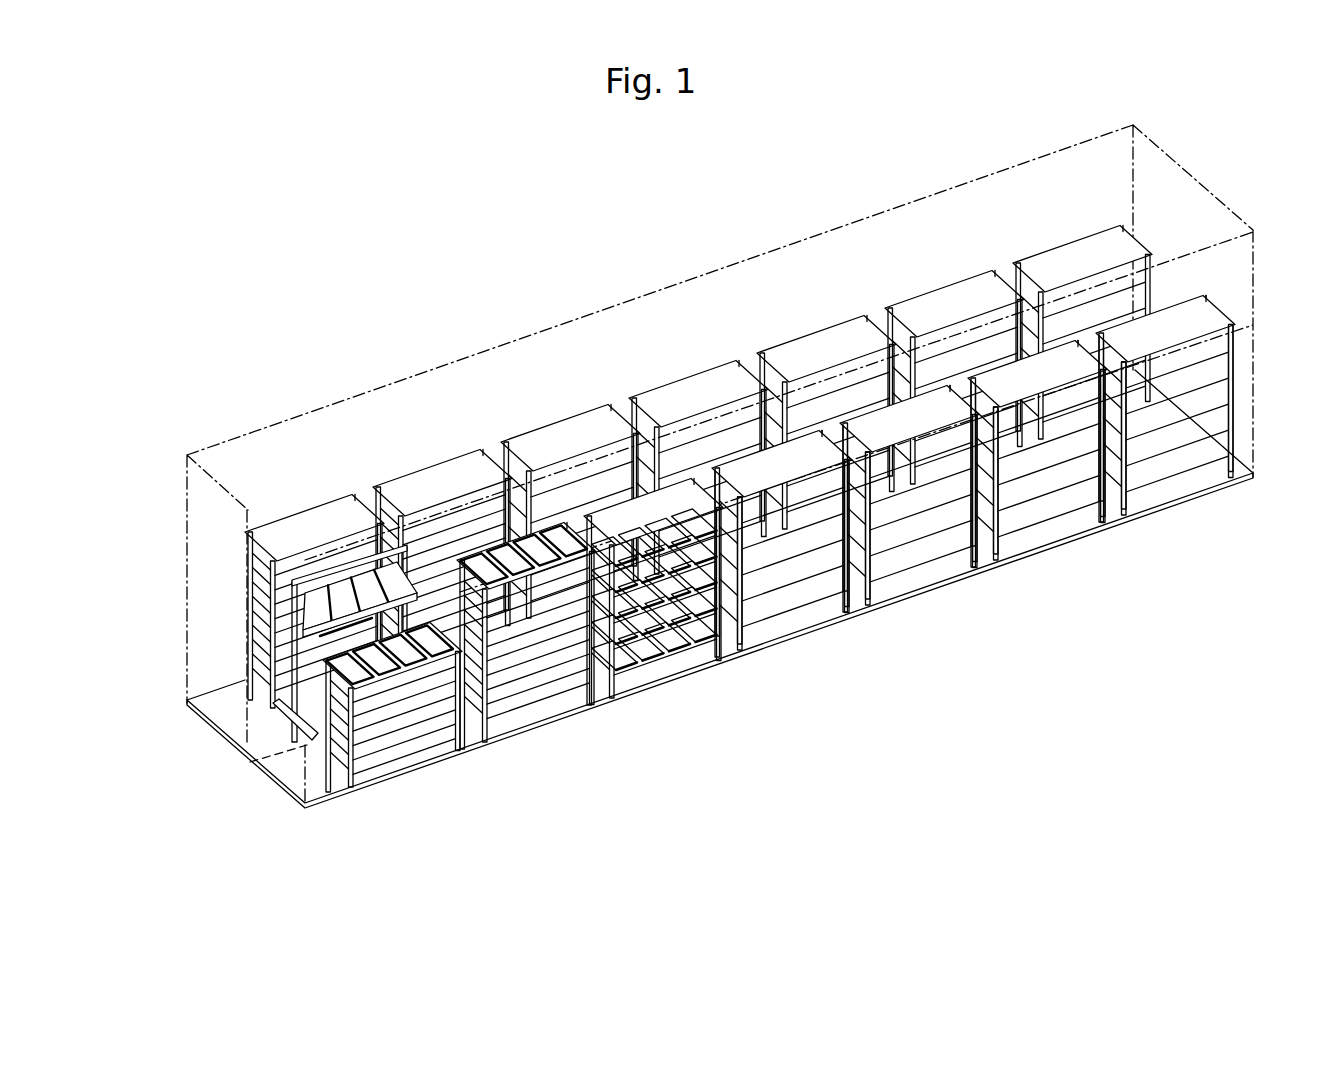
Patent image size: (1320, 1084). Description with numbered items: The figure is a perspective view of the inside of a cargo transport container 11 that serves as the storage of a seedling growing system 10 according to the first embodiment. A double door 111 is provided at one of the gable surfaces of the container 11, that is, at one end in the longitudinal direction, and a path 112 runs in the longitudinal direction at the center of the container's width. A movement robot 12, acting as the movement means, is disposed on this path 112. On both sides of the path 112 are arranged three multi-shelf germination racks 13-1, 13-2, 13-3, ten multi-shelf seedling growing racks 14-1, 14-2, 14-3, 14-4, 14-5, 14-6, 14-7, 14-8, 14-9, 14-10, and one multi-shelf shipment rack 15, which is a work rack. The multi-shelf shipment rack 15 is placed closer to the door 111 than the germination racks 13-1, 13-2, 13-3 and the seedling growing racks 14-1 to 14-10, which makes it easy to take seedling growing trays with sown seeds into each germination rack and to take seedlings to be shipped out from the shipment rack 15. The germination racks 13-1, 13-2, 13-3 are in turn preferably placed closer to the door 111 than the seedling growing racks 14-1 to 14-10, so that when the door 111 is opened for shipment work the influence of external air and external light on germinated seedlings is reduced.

The seedling growing system 10 is at (1160, 669).
The container 11 is at (1136, 123).
The double door 111 is at (243, 690).
The path 112 is at (262, 748).
The movement robot 12 is at (262, 597).
The multi-shelf germination rack 13-1 is at (305, 533).
The multi-shelf germination rack 13-2 is at (527, 637).
The multi-shelf germination rack 13-3 is at (437, 487).
The multi-shelf seedling growing rack 14-1 is at (563, 437).
The multi-shelf seedling growing rack 14-2 is at (668, 613).
The multi-shelf seedling growing rack 14-3 is at (693, 392).
The multi-shelf seedling growing rack 14-4 is at (795, 558).
The multi-shelf seedling growing rack 14-5 is at (822, 347).
The multi-shelf seedling growing rack 14-6 is at (930, 518).
The multi-shelf seedling growing rack 14-7 is at (955, 305).
The multi-shelf seedling growing rack 14-8 is at (1050, 468).
The multi-shelf seedling growing rack 14-9 is at (1087, 262).
The multi-shelf seedling growing rack 14-10 is at (1160, 432).
The multi-shelf shipment rack 15 is at (413, 727).